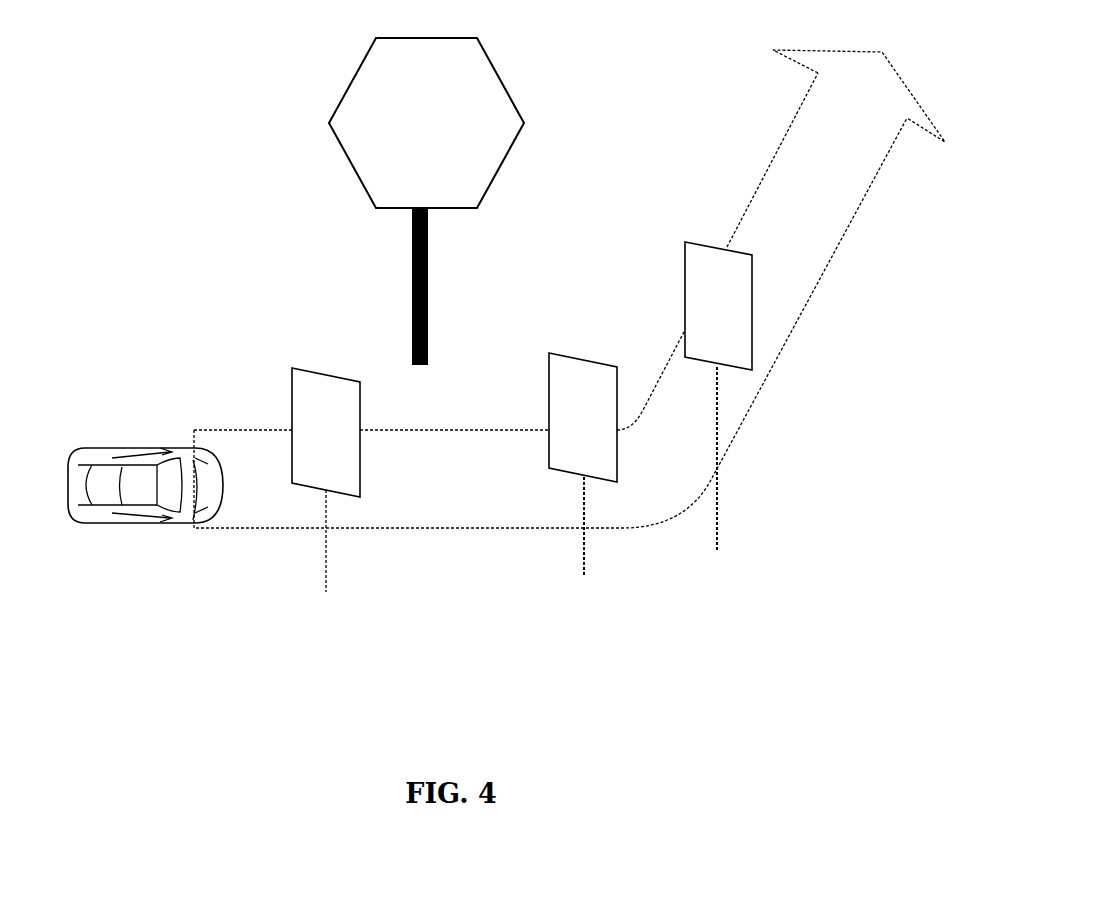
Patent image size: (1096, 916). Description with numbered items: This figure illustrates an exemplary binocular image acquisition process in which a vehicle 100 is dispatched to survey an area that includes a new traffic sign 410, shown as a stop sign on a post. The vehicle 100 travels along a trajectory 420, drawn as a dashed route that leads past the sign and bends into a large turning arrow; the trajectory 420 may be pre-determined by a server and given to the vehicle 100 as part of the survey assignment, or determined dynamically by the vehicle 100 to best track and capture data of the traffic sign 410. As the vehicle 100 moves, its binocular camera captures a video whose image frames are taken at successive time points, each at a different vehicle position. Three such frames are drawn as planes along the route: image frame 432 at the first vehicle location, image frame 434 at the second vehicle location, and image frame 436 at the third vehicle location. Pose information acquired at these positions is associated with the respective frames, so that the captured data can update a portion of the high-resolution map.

The vehicle 100 is at (40, 468).
The traffic sign 410 is at (330, 102).
The trajectory 420 is at (859, 96).
The image frame 432 is at (278, 380).
The image frame 434 is at (535, 377).
The image frame 436 is at (657, 278).